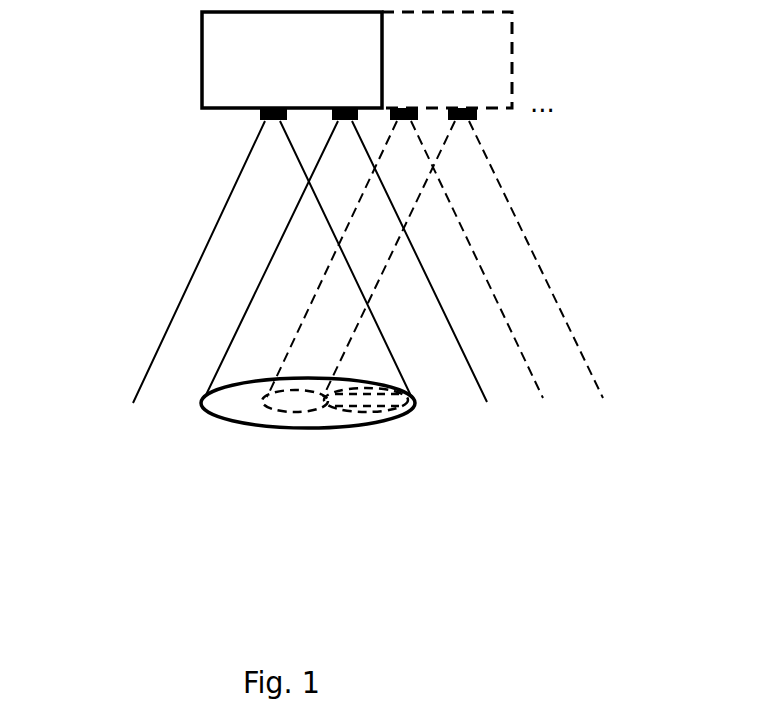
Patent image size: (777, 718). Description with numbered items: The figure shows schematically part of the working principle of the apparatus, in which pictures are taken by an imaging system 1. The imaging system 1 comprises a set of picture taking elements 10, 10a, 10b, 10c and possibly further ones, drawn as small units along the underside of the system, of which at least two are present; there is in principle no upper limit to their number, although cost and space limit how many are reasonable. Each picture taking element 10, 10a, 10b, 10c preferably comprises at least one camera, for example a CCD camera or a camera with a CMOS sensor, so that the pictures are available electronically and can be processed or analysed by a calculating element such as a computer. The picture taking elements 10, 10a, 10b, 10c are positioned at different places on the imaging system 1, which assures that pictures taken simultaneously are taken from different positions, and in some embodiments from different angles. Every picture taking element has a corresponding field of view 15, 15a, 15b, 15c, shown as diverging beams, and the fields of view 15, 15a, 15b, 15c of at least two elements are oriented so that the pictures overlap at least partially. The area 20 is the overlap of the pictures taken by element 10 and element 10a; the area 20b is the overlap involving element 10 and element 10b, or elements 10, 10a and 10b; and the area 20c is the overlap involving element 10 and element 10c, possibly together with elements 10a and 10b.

The imaging system 1 is at (357, 60).
The picture taking element 10 is at (260, 122).
The picture taking element 10a is at (335, 122).
The picture taking element 10b is at (403, 120).
The picture taking element 10c is at (467, 120).
The field of view 15 is at (190, 285).
The field of view 15a is at (245, 320).
The field of view 15b is at (470, 243).
The field of view 15c is at (572, 332).
The overlap area 20 is at (235, 405).
The overlap area 20b is at (300, 400).
The overlap area 20c is at (377, 397).